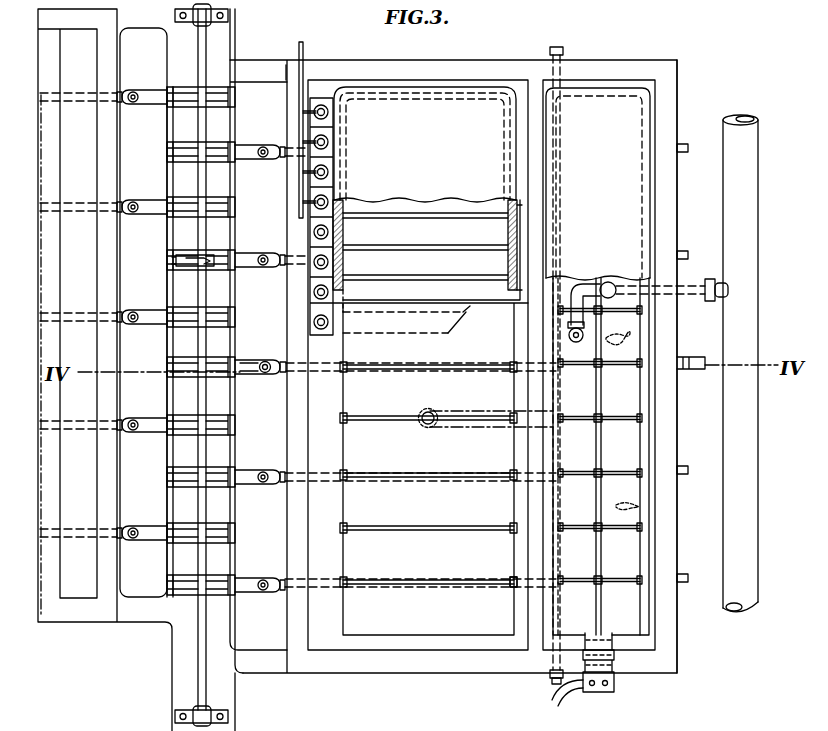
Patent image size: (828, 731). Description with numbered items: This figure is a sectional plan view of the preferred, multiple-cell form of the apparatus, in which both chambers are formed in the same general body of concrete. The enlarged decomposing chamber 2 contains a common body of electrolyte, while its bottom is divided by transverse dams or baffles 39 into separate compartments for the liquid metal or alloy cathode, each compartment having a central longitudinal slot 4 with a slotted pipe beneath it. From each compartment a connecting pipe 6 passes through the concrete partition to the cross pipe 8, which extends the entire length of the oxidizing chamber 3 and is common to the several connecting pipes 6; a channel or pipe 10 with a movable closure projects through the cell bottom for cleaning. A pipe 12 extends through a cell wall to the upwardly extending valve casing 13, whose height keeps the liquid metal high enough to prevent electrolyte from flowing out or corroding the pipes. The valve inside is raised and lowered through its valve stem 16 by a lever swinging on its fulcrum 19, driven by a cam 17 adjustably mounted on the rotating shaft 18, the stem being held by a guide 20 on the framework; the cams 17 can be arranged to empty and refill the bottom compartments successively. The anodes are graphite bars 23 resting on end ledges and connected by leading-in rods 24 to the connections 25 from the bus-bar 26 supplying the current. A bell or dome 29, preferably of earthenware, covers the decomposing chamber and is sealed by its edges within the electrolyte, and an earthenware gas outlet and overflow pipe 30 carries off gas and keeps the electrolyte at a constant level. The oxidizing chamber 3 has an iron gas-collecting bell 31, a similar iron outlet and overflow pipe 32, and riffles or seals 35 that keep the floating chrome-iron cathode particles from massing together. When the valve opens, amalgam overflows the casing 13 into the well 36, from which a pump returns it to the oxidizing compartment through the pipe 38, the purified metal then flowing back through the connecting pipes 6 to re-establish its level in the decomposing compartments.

The decomposing chamber 2 is at (415, 343).
The oxidizing chamber 3 is at (599, 343).
The central longitudinal slot 4 is at (429, 370).
The connecting pipe 6 is at (512, 482).
The cross pipe 8 is at (552, 677).
The channel or pipe 10 is at (686, 370).
The pipe 12 is at (284, 375).
The valve casing 13 is at (266, 373).
The valve stem 16 is at (263, 158).
The cam 17 is at (190, 266).
The rotating shaft 18 is at (210, 62).
The fulcrum 19 is at (228, 97).
The guide 20 is at (258, 480).
The anode 23 is at (427, 250).
The leading-in rod 24 is at (330, 113).
The connection 25 is at (330, 143).
The bus-bar 26 is at (304, 46).
The bell or dome 29 is at (425, 144).
The gas outlet and overflow pipe 30 is at (440, 404).
The gas-collecting bell 31 is at (598, 184).
The gas outlet and overflow pipe 32 is at (580, 341).
The riffles or seals 35 is at (628, 368).
The well 36 is at (254, 358).
The pipe 38 is at (698, 357).
The dams or baffles 39 is at (490, 310).